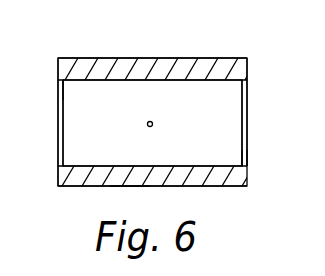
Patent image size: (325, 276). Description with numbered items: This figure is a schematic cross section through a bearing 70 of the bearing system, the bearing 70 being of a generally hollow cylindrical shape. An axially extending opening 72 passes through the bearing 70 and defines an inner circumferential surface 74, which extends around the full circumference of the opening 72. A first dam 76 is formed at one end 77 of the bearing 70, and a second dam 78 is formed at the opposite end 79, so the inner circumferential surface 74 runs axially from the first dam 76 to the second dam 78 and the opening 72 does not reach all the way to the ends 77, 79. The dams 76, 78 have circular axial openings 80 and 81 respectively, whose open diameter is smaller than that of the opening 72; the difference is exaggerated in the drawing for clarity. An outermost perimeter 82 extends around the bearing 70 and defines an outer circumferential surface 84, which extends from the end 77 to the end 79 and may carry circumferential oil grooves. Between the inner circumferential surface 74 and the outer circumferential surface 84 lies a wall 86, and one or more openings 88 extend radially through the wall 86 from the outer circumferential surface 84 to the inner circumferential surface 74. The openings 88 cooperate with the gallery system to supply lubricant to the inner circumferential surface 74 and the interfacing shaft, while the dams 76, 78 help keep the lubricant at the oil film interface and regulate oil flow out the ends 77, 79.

The bearing 70 is at (117, 52).
The axially extending opening 72 is at (208, 84).
The inner circumferential surface 74 is at (152, 97).
The first dam 76 is at (60, 160).
The end 77 is at (58, 65).
The second dam 78 is at (247, 83).
The opposite end 79 is at (249, 62).
The axial opening 80 is at (58, 91).
The axial opening 81 is at (245, 160).
The outermost perimeter 82 is at (190, 185).
The outer circumferential surface 84 is at (97, 187).
The wall 86 is at (127, 182).
The openings 88 is at (153, 124).